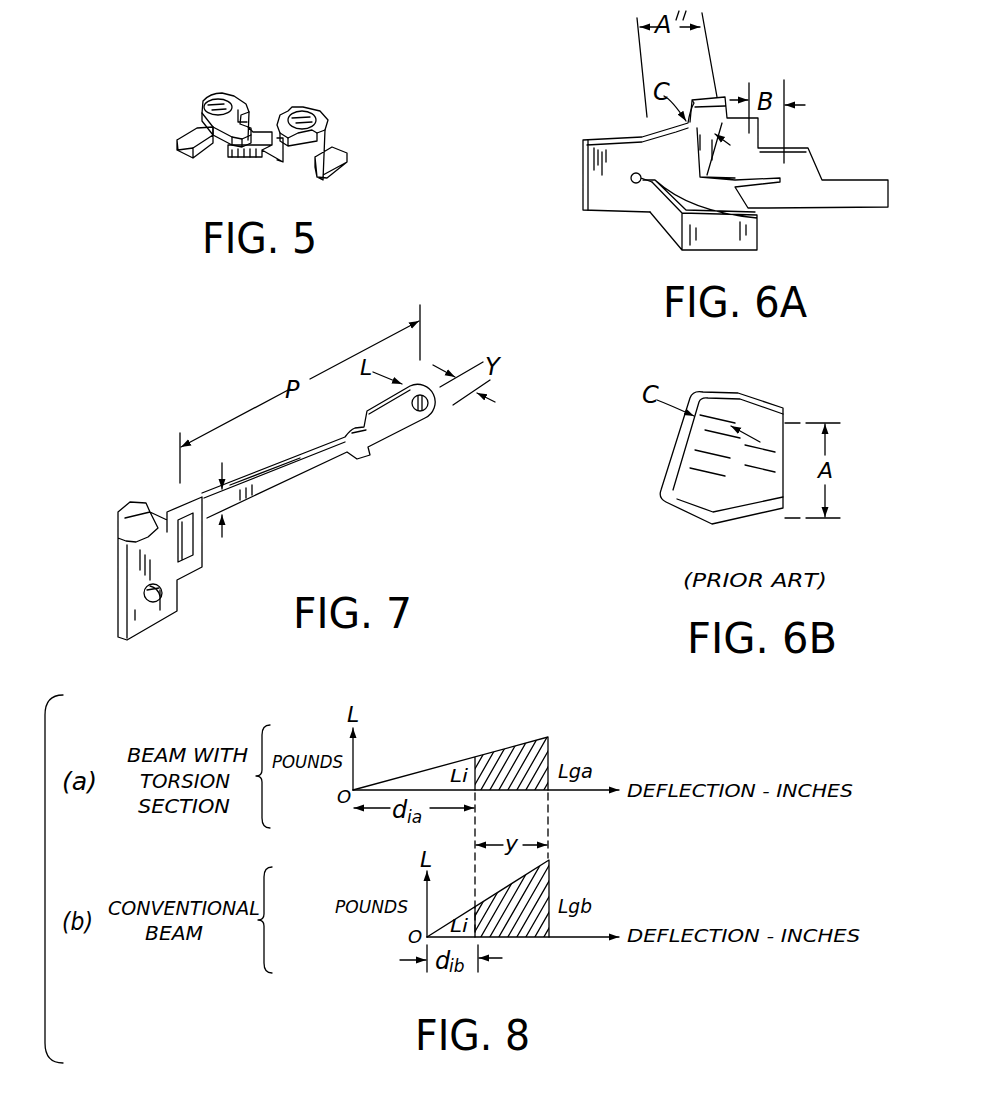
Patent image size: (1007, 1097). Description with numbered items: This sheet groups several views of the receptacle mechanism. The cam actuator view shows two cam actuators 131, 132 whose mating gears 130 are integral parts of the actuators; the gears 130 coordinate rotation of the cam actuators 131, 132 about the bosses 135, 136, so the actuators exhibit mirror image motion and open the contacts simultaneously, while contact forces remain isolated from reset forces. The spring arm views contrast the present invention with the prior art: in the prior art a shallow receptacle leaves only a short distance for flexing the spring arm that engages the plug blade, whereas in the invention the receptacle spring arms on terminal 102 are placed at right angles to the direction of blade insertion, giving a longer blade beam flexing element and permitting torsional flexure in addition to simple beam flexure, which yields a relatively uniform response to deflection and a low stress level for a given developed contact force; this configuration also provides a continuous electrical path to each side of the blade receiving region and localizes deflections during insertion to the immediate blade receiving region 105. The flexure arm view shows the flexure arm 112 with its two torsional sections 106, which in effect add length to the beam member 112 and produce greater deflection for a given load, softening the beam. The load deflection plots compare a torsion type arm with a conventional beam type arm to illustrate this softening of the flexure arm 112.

In FIG. 6A, the terminal 102 is at (598, 136).
In FIG. 6A, the blade receiving region 105 is at (748, 230).
In FIG. 7, the torsional sections 106 is at (229, 494).
In FIG. 7, the flexure arm 112 is at (272, 502).
In FIG. 5, the mating gears 130 is at (272, 123).
In FIG. 5, the cam actuator 131 is at (303, 109).
In FIG. 5, the cam actuator 132 is at (204, 98).
In FIG. 5, the boss 135 is at (215, 108).
In FIG. 5, the boss 136 is at (302, 120).